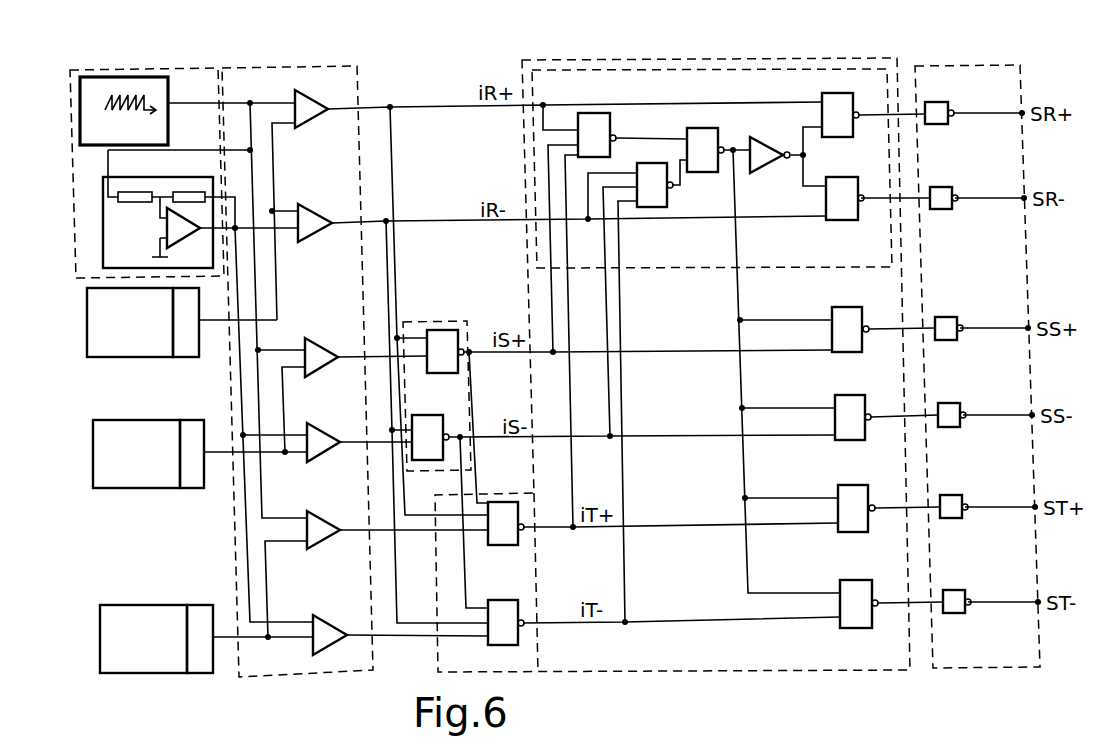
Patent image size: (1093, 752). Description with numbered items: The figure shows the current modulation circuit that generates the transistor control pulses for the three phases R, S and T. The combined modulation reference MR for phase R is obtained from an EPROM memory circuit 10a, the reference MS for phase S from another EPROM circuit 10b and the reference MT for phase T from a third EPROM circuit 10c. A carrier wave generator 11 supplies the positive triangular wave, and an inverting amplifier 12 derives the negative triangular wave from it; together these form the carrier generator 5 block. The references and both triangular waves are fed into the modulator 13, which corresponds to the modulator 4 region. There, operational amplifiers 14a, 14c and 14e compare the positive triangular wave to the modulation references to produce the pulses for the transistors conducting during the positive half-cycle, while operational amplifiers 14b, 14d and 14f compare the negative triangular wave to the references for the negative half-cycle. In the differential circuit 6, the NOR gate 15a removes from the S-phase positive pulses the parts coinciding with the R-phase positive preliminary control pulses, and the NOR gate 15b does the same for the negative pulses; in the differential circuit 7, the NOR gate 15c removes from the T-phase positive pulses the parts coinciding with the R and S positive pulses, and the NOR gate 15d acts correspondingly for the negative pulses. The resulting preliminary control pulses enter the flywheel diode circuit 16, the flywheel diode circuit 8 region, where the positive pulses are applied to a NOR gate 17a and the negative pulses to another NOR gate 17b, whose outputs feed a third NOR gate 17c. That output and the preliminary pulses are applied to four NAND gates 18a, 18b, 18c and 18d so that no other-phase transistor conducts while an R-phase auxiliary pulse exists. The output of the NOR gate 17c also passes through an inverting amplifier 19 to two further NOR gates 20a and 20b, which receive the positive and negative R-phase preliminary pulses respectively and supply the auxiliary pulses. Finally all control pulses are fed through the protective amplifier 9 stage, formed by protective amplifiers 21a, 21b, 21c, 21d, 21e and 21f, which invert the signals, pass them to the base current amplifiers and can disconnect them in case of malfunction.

The modulator 4 is at (350, 65).
The carrier generator 5 is at (183, 69).
The differential circuit (−R) 6 is at (415, 322).
The differential circuit (−R−S) 7 is at (438, 670).
The flywheel diode circuit (D0) 8 is at (590, 70).
The protective amplifier 9 is at (940, 65).
The EPROM memory circuit 10a is at (87, 298).
The EPROM circuit 10b is at (93, 420).
The EPROM circuit 10c is at (100, 605).
The carrier wave generator 11 is at (96, 77).
The inverting amplifier 12 is at (100, 208).
The modulator 13 is at (350, 65).
The operational amplifier 14a is at (327, 117).
The operational amplifier 14b is at (327, 218).
The operational amplifier 14c is at (310, 340).
The operational amplifier 14d is at (338, 420).
The operational amplifier 14e is at (338, 506).
The operational amplifier 14f is at (352, 600).
The NOR gate 15a is at (475, 312).
The NOR gate 15b is at (445, 423).
The NOR gate 15c is at (505, 502).
The NOR gate 15d is at (515, 589).
The flywheel diode circuit 16 is at (830, 58).
The NOR gate 17a is at (611, 128).
The NOR gate 17b is at (668, 195).
The NOR gate 17c is at (700, 128).
The NAND gate 18a is at (840, 307).
The NAND gate 18b is at (843, 395).
The NAND gate 18c is at (845, 485).
The NAND gate 18d is at (850, 580).
The inverting amplifier 19 is at (777, 168).
The NOR gate 20a is at (830, 137).
The NOR gate 20b is at (835, 220).
The protective amplifier 21a is at (937, 124).
The protective amplifier 21b is at (940, 209).
The protective amplifier 21c is at (945, 340).
The protective amplifier 21d is at (948, 427).
The protective amplifier 21e is at (950, 518).
The protective amplifier 21f is at (953, 613).